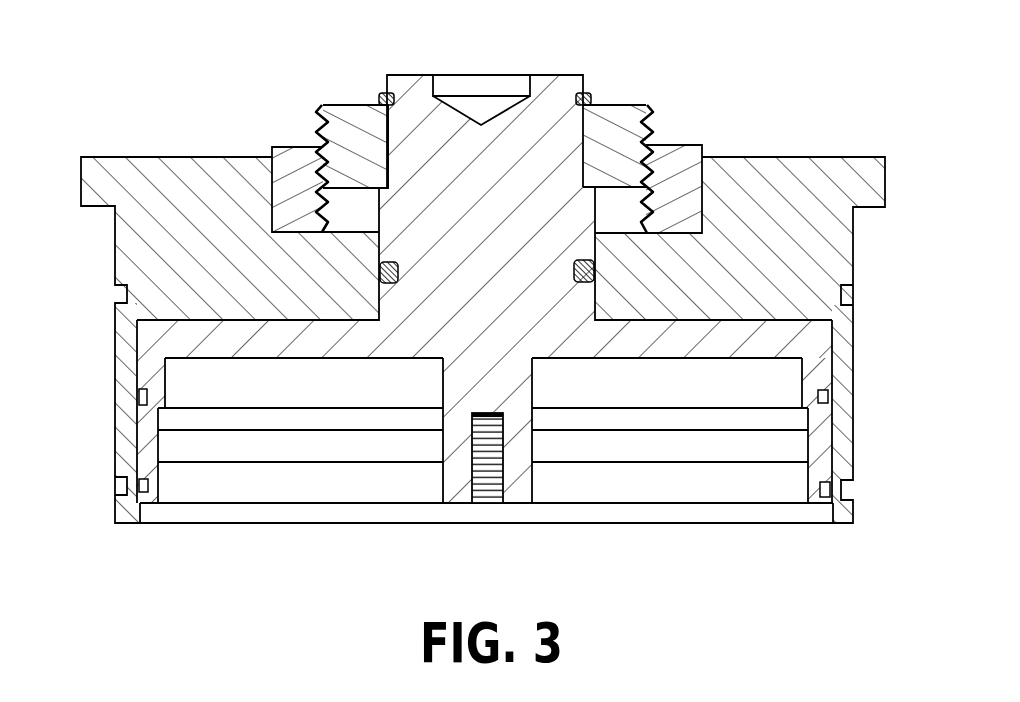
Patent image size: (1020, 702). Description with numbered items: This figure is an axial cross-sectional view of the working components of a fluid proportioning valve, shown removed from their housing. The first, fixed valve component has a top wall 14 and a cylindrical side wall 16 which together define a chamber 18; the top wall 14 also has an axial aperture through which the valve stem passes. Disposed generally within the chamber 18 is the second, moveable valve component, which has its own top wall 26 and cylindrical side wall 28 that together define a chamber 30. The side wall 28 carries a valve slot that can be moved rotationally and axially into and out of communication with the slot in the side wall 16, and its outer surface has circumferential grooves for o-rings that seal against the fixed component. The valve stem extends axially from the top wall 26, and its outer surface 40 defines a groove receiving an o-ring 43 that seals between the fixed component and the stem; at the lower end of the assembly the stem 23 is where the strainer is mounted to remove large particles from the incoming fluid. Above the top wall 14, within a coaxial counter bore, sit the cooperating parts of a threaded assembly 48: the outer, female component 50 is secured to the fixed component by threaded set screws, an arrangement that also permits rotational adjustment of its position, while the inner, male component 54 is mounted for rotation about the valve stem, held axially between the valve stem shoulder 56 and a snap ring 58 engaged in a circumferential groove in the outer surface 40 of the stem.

The top wall 14 is at (147, 177).
The cylindrical side wall 16 is at (125, 388).
The chamber 18 is at (670, 430).
The chamber 30 is at (641, 401).
The stem 23 is at (513, 478).
The top wall 26 is at (255, 342).
The cylindrical side wall 28 is at (817, 362).
The outer surface 40 is at (640, 183).
The o-ring 43 is at (573, 278).
The threaded assembly 48 is at (257, 125).
The outer (female) component 50 is at (672, 183).
The inner (male) component 54 is at (350, 120).
The valve stem shoulder 56 is at (583, 185).
The snap ring 58 is at (590, 99).